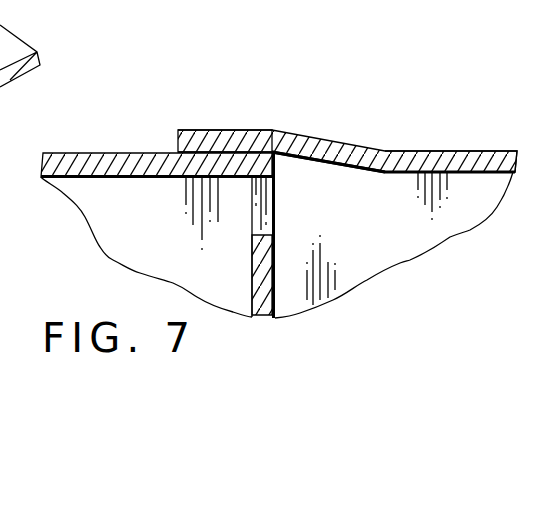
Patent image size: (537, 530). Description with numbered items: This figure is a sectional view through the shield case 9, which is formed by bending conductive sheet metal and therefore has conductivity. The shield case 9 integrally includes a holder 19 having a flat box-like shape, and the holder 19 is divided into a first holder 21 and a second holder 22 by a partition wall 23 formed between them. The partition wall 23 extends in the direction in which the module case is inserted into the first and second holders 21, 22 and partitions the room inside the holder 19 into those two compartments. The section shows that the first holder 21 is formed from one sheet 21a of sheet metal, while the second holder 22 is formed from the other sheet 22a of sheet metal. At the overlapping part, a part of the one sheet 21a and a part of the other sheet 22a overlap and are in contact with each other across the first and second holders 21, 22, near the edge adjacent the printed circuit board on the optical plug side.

The shield case 9 is at (331, 141).
The holder 19 is at (272, 129).
The first holder 21 is at (115, 153).
The one sheet of sheet metal 21a is at (132, 167).
The second holder 22 is at (412, 150).
The other sheet of sheet metal 22a is at (318, 152).
The partition wall 23 is at (262, 300).